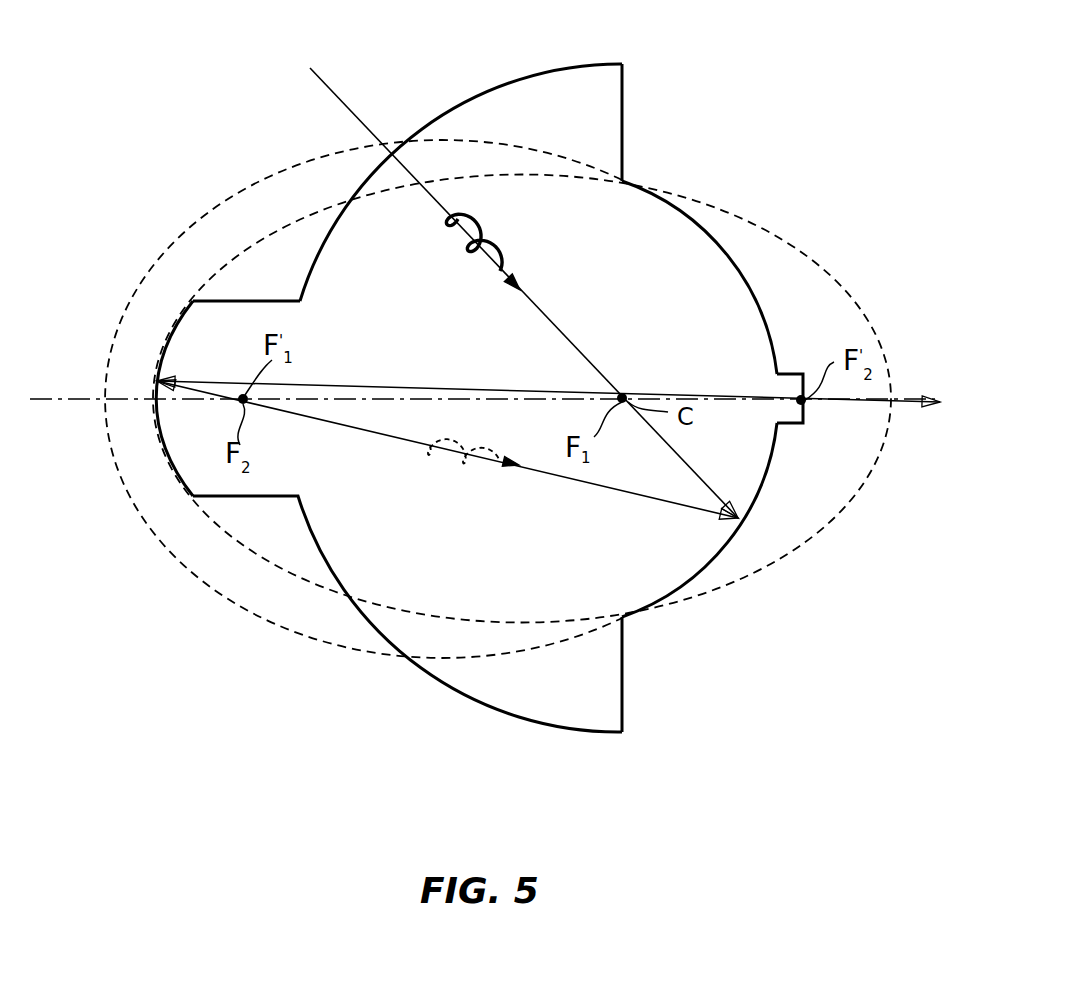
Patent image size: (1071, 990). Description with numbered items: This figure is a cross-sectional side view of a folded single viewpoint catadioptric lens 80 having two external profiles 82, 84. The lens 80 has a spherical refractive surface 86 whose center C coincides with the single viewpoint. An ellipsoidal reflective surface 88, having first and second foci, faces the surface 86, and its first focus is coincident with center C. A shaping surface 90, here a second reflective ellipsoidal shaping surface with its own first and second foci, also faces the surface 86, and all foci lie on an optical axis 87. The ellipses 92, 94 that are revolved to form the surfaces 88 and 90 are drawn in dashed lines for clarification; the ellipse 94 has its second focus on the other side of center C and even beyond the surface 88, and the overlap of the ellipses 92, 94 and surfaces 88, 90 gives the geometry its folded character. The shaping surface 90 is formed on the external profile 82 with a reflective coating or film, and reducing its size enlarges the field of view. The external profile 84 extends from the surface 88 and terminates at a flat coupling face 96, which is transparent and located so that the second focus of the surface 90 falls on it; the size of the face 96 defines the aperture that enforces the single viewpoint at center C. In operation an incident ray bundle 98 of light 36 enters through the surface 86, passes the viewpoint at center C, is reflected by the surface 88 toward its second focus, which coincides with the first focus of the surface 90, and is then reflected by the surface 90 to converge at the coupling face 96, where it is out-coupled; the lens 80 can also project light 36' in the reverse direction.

The folded single viewpoint catadioptric lens 80 is at (106, 146).
The external profile 82 is at (268, 300).
The external profile 84 is at (790, 372).
The spherical refractive surface 86 is at (441, 117).
The optical axis 87 is at (67, 397).
The ellipsoidal reflective surface 88 is at (690, 580).
The shaping surface 90 is at (158, 428).
The ellipse 92 is at (188, 572).
The ellipse 94 is at (813, 537).
The flat coupling face 96 is at (805, 425).
The incident ray bundle 98 is at (347, 113).
The light 36 is at (496, 241).
The light 36' is at (447, 459).